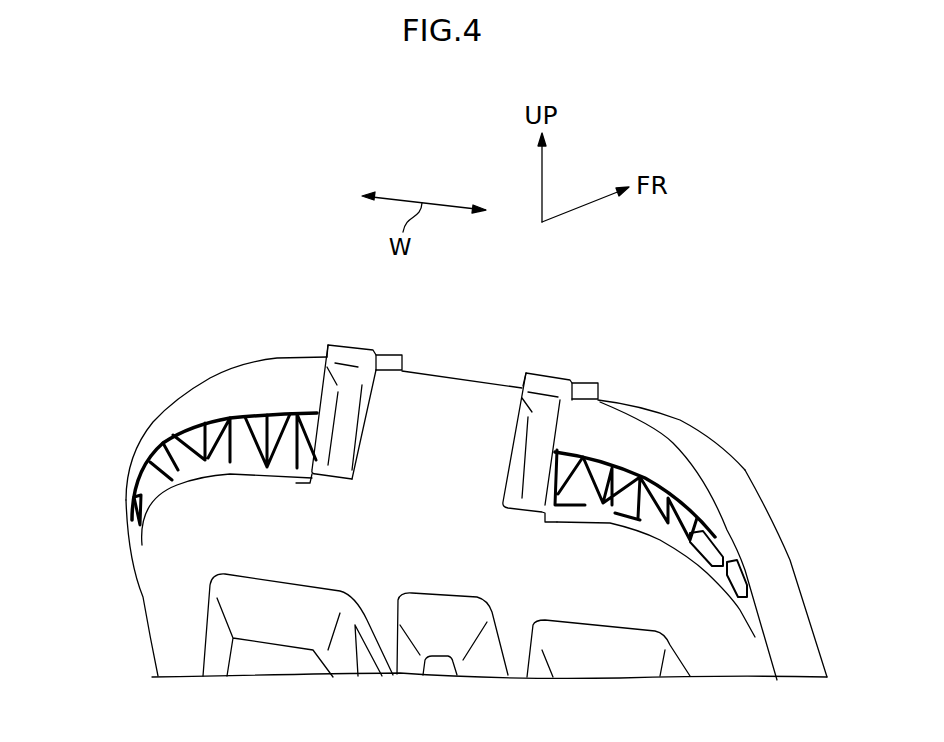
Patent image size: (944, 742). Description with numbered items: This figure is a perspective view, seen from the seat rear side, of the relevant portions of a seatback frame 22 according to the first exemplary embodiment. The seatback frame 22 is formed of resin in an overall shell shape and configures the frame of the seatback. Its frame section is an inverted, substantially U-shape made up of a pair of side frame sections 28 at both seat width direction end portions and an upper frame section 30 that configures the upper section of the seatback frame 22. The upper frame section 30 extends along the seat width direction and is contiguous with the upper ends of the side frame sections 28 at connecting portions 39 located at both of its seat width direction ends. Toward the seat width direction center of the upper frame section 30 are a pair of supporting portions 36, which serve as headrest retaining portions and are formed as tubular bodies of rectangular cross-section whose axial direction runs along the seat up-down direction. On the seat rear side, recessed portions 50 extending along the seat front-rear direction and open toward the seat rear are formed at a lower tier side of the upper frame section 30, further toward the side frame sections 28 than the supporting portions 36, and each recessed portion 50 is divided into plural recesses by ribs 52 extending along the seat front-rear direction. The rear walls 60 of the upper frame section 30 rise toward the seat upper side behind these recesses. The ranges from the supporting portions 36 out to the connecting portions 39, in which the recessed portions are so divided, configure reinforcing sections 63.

The seatback frame 22 is at (753, 489).
The side frame section 28 is at (147, 607).
The upper frame section 30 is at (455, 372).
The supporting portion 36 is at (357, 346).
The connecting portion 39 is at (140, 542).
The recessed portion 50 is at (157, 443).
The rib 52 is at (257, 420).
The rear wall 60 is at (228, 387).
The reinforcing section 63 is at (200, 387).